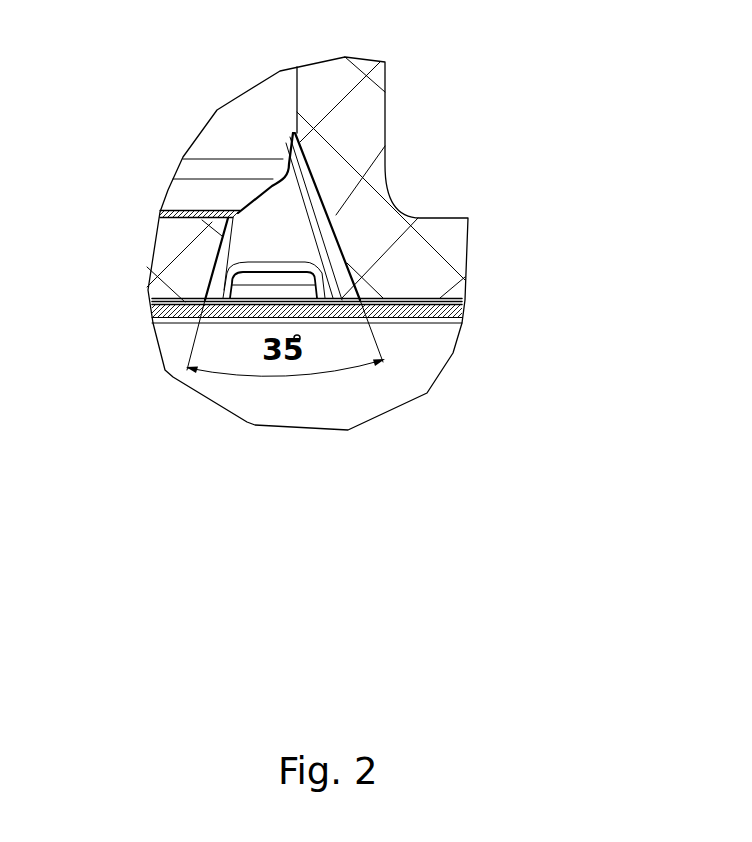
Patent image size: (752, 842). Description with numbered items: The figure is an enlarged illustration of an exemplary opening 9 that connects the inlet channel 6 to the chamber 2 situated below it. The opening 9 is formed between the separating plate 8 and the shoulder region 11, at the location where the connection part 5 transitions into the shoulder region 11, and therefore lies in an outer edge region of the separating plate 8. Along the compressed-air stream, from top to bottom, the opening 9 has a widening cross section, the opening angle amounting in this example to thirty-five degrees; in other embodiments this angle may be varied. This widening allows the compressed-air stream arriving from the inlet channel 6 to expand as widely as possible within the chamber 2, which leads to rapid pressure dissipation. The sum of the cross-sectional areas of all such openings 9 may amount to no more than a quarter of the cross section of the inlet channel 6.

The chamber 2 is at (237, 390).
The connection part 5 is at (373, 104).
The inlet channel 6 is at (252, 130).
The separating plate 8 is at (175, 246).
The opening 9 is at (283, 232).
The shoulder region 11 is at (453, 238).